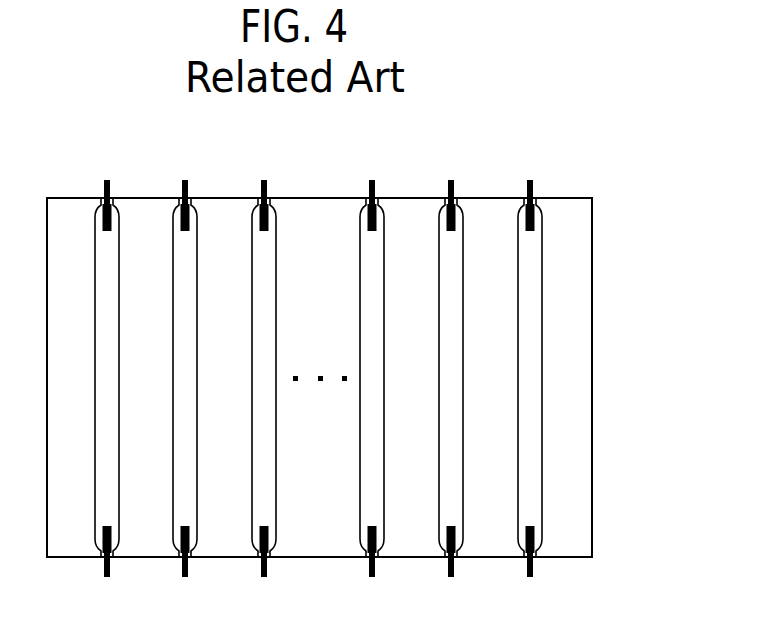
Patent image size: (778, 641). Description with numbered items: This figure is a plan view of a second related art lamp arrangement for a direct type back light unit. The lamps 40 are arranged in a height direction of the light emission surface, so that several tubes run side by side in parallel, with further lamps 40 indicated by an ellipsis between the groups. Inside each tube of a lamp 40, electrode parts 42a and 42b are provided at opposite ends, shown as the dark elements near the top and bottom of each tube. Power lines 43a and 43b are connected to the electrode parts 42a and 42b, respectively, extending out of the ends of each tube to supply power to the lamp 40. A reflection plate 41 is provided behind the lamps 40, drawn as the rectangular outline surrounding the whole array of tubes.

The lamp 40 is at (530, 326).
The reflection plate 41 is at (578, 378).
The electrode part 42a is at (118, 213).
The electrode part 42b is at (118, 542).
The power line 43a is at (104, 195).
The power line 43b is at (110, 560).